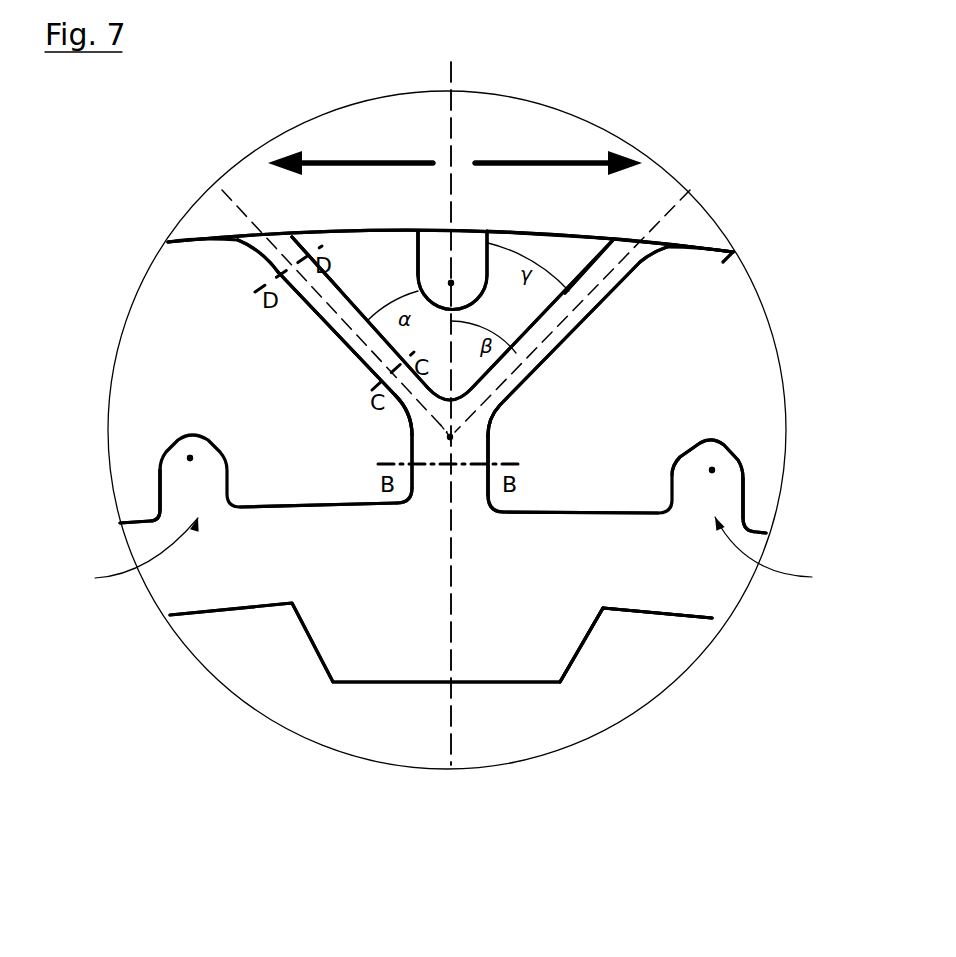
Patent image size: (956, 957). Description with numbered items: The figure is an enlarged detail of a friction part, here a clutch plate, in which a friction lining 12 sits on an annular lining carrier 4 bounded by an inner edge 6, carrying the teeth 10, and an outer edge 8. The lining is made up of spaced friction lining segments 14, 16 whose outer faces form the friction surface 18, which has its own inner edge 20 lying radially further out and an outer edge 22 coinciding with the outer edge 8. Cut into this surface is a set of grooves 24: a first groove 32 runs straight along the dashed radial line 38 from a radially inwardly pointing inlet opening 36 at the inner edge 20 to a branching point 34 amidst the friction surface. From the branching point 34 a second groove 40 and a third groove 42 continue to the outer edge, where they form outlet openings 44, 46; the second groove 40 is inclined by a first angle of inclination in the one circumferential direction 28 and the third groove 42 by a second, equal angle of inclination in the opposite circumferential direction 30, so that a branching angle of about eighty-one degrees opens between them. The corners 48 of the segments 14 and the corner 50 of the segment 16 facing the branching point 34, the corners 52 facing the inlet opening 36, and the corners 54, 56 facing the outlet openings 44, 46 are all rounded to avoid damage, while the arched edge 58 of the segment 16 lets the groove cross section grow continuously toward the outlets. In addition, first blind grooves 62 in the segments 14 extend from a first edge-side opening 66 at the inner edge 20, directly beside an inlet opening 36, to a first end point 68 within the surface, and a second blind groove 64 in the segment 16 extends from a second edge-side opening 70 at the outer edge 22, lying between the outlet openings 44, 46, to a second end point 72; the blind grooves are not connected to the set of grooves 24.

The lining carrier 4 is at (627, 483).
The inner edge 6 is at (660, 617).
The outer edge 8 is at (712, 249).
The teeth 10 is at (558, 640).
The friction lining 12 is at (746, 484).
The friction lining segments 14 is at (723, 262).
The friction lining segment 16 is at (593, 262).
The friction surface 18 is at (665, 570).
The inner edge 20 is at (343, 503).
The outer edge 22 is at (712, 249).
The set of grooves 24 is at (315, 315).
The circumferential direction 28 is at (372, 229).
The circumferential direction 30 is at (558, 232).
The first groove 32 is at (486, 452).
The branching point 34 is at (452, 437).
The inlet opening 36 is at (435, 510).
The radial line 38 is at (452, 735).
The second groove 40 is at (360, 362).
The third groove 42 is at (552, 352).
The outlet opening 44 is at (240, 228).
The outlet opening 46 is at (655, 245).
The corners 48 is at (408, 417).
The corner 50 is at (450, 404).
The corners 52 is at (402, 503).
The corners 54 is at (237, 240).
The corners 56 is at (292, 237).
The edge 58 is at (367, 323).
The first blind grooves 62 is at (158, 472).
The second blind grooves 64 is at (410, 260).
The first edge-side opening 66 is at (448, 555).
The first end point 68 is at (187, 467).
The second edge-side opening 70 is at (462, 212).
The second end point 72 is at (462, 280).